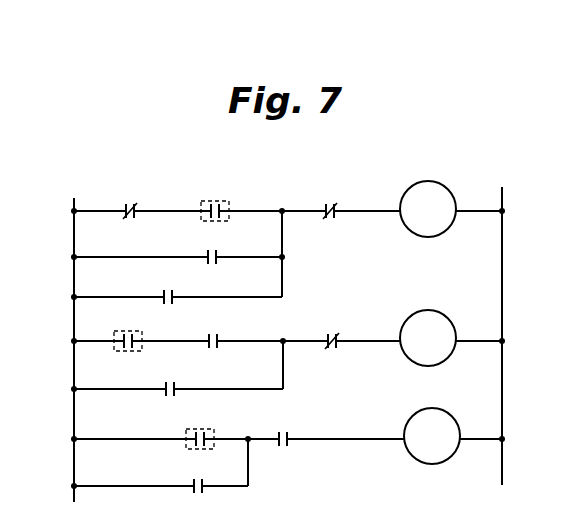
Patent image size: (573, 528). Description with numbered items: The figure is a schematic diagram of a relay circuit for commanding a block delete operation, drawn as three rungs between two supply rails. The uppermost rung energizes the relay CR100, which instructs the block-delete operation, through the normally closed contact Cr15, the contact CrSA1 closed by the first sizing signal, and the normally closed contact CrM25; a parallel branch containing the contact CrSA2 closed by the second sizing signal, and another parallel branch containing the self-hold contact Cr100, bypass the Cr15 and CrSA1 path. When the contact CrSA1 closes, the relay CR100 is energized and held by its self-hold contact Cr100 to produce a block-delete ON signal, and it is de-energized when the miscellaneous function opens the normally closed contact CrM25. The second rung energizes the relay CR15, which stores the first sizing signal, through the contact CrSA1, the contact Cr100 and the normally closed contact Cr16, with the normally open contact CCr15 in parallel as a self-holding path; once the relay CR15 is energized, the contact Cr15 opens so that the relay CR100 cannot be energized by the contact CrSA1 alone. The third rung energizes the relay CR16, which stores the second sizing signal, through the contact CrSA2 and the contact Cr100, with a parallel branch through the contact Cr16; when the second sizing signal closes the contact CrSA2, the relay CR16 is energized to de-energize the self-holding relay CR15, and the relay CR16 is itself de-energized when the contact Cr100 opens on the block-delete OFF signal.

The normally closed contact Cr15 is at (127, 196).
The contact closed by the first sizing signal CrSA1 is at (171, 262).
The normally closed contact CrM25 is at (339, 196).
The relay for instructing a block-delete operation CR100 is at (428, 209).
The contact closed by the second sizing signal CrSA2 is at (201, 339).
The self-hold contact Cr100 is at (243, 358).
The contact of relay CR16 Cr16 is at (267, 402).
The relay for storing the first sizing signal CR15 is at (428, 338).
The normally open contact CCr15 is at (180, 379).
The relay for storing the second sizing signal CR16 is at (432, 436).